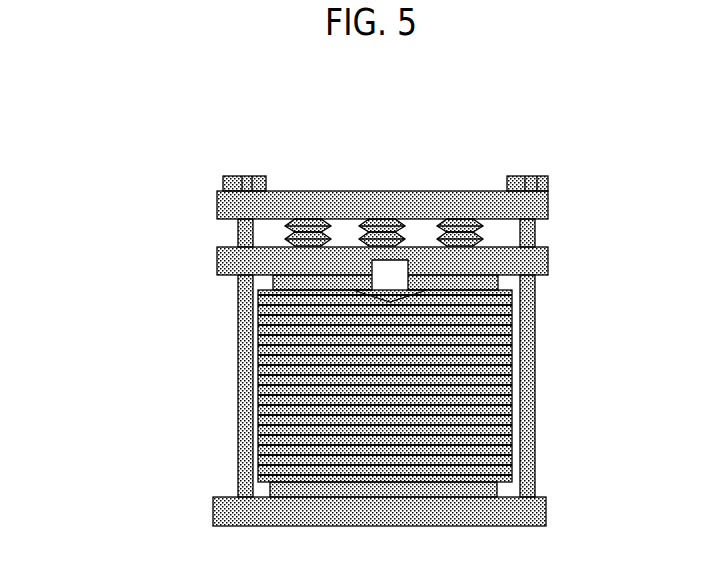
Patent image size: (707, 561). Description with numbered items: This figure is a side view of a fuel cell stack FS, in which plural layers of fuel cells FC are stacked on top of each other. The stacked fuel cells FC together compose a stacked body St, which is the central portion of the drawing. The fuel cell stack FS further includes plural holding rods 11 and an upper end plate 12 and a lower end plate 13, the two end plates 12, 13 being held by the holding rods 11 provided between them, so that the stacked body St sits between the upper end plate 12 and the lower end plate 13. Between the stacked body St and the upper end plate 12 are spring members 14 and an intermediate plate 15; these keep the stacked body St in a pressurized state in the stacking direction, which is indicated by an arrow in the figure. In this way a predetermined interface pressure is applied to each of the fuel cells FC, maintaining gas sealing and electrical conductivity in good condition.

The fuel cell stack FS is at (381, 318).
The holding rods 11 is at (240, 408).
The upper end plate 12 is at (222, 196).
The lower end plate 13 is at (222, 511).
The spring members 14 is at (448, 243).
The intermediate plate 15 is at (548, 257).
The stacked body St is at (483, 393).
The fuel cells FC is at (258, 372).